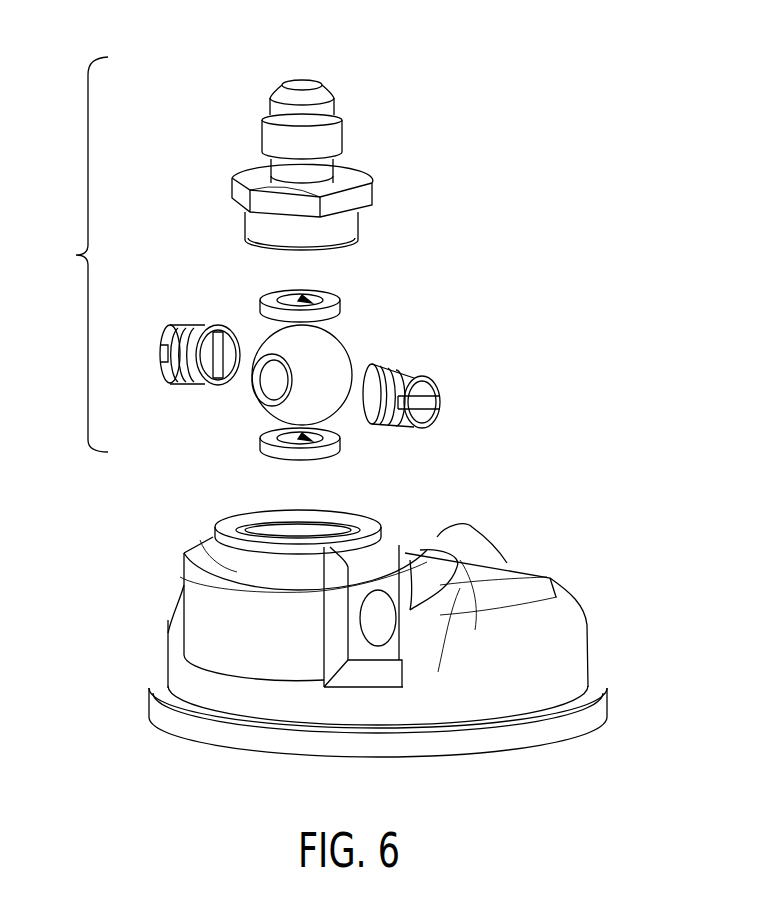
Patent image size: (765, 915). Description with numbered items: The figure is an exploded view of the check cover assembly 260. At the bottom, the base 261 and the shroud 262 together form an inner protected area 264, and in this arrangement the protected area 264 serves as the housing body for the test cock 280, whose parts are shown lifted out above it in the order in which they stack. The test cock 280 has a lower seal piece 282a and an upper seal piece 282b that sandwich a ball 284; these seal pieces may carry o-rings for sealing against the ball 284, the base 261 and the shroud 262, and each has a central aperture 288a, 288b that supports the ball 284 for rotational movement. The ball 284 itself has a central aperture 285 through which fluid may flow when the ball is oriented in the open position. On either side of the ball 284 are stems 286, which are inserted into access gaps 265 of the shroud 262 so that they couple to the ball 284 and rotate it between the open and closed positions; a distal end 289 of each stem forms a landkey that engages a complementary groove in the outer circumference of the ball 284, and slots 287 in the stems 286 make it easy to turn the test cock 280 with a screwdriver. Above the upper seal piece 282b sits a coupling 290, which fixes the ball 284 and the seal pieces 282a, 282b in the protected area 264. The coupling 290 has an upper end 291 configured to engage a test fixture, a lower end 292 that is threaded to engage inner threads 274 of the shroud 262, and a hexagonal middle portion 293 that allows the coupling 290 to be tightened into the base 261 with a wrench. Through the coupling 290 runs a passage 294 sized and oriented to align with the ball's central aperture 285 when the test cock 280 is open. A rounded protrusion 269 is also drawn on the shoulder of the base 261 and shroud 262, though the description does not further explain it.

The check cover assembly 260 is at (367, 626).
The base 261 is at (568, 657).
The shroud 262 is at (207, 585).
The inner protected area 264 is at (308, 537).
The access gaps 265 is at (372, 607).
The protrusion 269 is at (488, 553).
The inner threads 274 is at (215, 533).
The test cock 280 is at (76, 255).
The lower seal piece 282a is at (268, 445).
The upper seal piece 282b is at (328, 307).
The ball 284 is at (276, 407).
The central aperture 285 is at (274, 384).
The stems 286 is at (182, 331).
The slots 287 is at (438, 406).
The central aperture 288a is at (331, 445).
The central aperture 288b is at (313, 303).
The distal end 289 is at (172, 362).
The coupling 290 is at (339, 128).
The upper end 291 is at (322, 108).
The lower end 292 is at (347, 228).
The middle portion 293 is at (362, 192).
The passage 294 is at (302, 105).